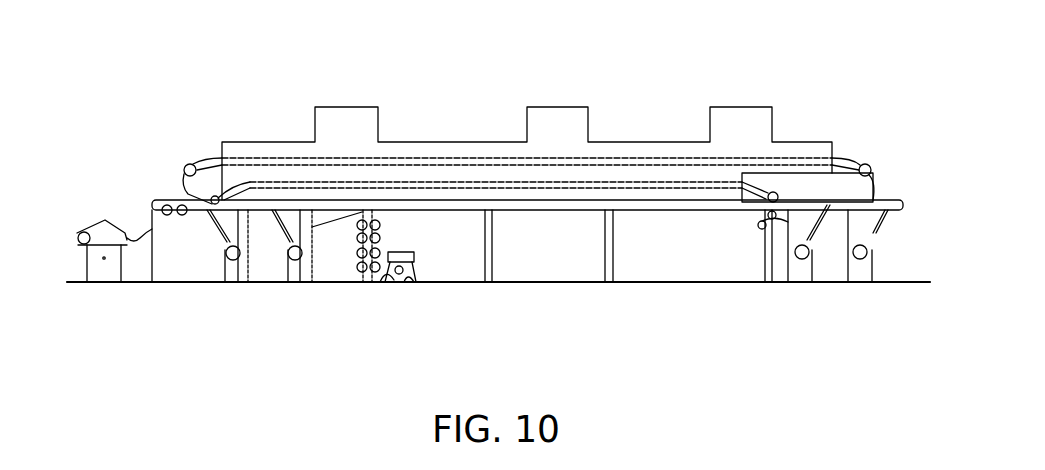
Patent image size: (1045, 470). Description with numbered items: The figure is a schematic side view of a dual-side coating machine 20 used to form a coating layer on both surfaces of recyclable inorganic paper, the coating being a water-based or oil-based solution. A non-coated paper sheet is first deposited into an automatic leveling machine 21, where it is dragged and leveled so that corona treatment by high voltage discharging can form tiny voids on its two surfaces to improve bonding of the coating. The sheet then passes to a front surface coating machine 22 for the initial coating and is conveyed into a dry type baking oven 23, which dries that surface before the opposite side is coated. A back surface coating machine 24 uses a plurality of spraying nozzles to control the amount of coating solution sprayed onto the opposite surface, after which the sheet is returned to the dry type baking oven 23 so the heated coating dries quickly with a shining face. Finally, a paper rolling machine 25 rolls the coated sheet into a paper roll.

The dual-side coating machine 20 is at (493, 46).
The automatic leveling machine 21 is at (427, 240).
The front surface coating machine 22 is at (200, 253).
The dry type baking oven 23 is at (580, 107).
The back surface coating machine 24 is at (887, 242).
The paper rolling machine 25 is at (80, 258).